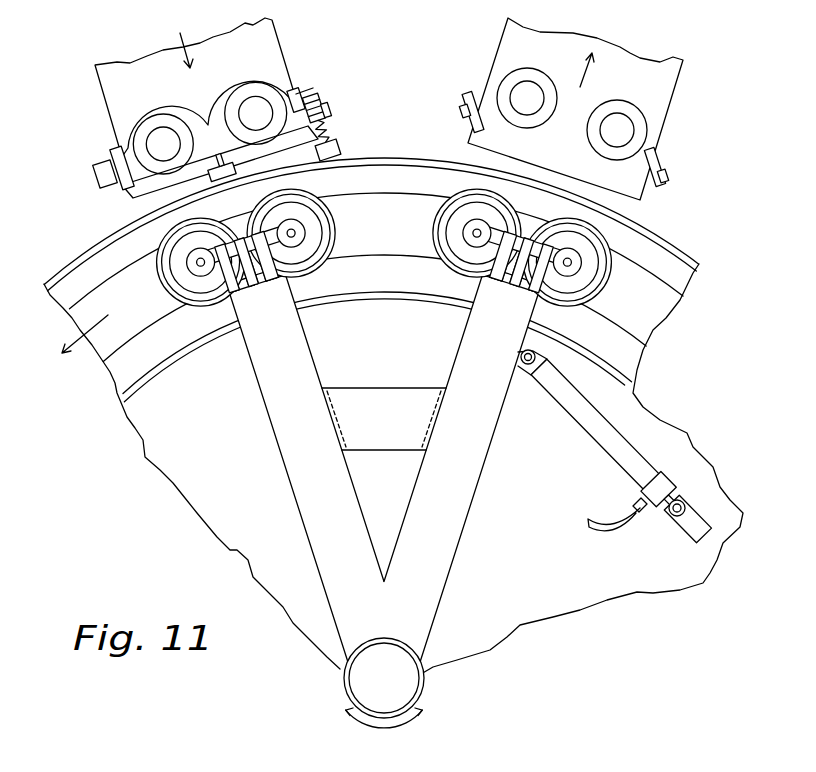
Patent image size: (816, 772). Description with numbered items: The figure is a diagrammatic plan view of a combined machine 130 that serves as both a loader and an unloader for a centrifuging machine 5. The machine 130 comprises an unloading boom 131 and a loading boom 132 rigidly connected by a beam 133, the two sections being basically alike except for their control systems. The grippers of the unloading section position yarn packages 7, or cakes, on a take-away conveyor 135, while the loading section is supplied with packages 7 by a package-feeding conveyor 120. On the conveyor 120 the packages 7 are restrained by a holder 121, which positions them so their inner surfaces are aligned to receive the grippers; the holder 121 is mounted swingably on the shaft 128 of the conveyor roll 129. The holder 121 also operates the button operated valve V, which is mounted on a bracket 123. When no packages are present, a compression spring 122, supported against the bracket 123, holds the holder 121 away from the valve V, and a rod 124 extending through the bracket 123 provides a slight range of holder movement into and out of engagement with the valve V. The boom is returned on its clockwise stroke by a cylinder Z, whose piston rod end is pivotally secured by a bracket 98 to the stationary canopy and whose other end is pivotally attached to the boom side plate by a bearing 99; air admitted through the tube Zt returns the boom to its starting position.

The centrifuging machine 5 is at (340, 107).
The yarn packages 7 is at (178, 257).
The bracket 98 is at (685, 528).
The bearing 99 is at (524, 366).
The conveyor 120 is at (280, 45).
The holder 121 is at (292, 96).
The compression spring 122 is at (325, 128).
The bracket 123 is at (337, 150).
The rod 124 is at (313, 95).
The shaft 128 is at (327, 107).
The conveyor roll 129 is at (305, 95).
The machine 130 is at (463, 582).
The unloading boom 131 is at (480, 468).
The loading boom 132 is at (273, 430).
The beam 133 is at (373, 395).
The take-away conveyor 135 is at (502, 62).
The button operated valve V is at (222, 168).
The cylinder Z is at (605, 438).
The tube Zt is at (628, 520).